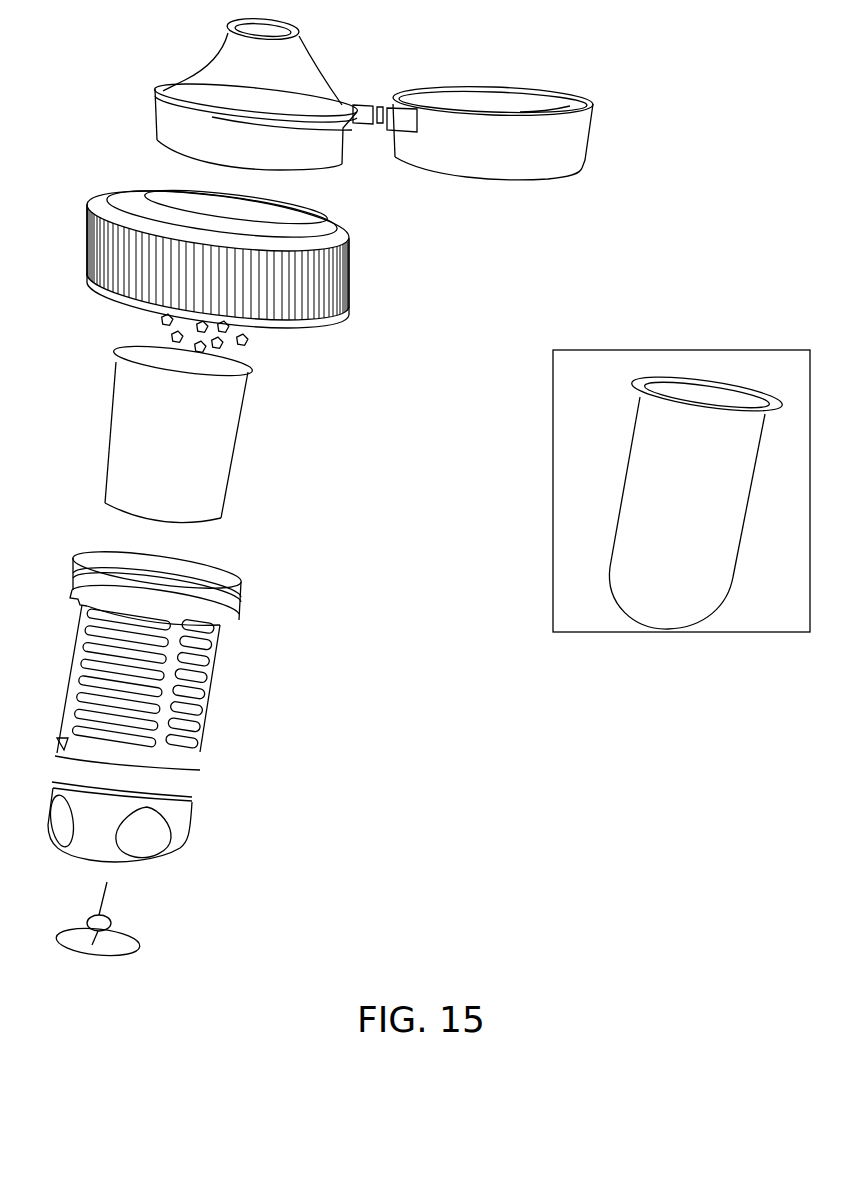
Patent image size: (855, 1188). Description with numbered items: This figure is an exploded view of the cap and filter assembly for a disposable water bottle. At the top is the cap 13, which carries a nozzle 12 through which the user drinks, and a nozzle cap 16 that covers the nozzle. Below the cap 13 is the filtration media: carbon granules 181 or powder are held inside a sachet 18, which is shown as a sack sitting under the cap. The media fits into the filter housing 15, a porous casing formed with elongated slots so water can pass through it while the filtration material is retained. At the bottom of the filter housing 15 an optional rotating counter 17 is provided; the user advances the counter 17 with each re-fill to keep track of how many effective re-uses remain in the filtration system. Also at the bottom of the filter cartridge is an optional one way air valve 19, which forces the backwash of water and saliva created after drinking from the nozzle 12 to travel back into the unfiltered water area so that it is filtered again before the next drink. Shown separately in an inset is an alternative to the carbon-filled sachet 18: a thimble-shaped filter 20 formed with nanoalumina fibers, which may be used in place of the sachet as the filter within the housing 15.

The nozzle 12 is at (307, 52).
The nozzle cap 16 is at (582, 158).
The cap 13 is at (350, 292).
The carbon granules 181 is at (252, 340).
The sachet 18 is at (233, 452).
The filter housing 15 is at (203, 725).
The rotating counter 17 is at (190, 802).
The one way air valve 19 is at (140, 948).
The thimble-shaped filter 20 is at (553, 493).